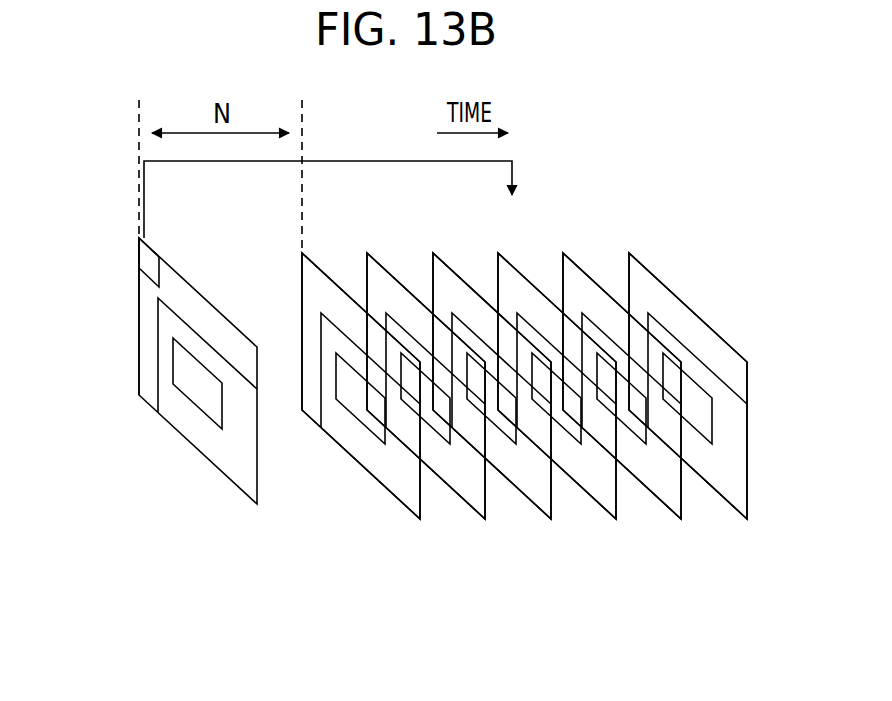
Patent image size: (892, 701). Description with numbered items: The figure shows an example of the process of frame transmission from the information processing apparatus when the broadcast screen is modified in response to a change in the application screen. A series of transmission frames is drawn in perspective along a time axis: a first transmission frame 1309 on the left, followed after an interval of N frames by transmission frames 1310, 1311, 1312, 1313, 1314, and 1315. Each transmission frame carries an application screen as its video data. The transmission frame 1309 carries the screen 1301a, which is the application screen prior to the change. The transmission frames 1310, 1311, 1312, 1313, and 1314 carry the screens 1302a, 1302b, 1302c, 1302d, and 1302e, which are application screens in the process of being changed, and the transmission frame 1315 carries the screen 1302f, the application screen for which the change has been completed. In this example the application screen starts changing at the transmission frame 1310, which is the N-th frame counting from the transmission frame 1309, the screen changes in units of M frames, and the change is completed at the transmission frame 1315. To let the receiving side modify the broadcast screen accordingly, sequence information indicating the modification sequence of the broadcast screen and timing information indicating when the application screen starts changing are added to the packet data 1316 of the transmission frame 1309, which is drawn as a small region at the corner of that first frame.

The screen 1301a is at (227, 471).
The screen 1302a is at (372, 475).
The screen 1302b is at (472, 505).
The screen 1302c is at (533, 504).
The screen 1302d is at (603, 505).
The screen 1302e is at (672, 508).
The screen 1302f is at (733, 506).
The transmission frame 1309 is at (139, 300).
The transmission frame 1310 is at (302, 253).
The transmission frame 1311 is at (367, 253).
The transmission frame 1312 is at (433, 253).
The transmission frame 1313 is at (498, 253).
The transmission frame 1314 is at (563, 253).
The transmission frame 1315 is at (629, 253).
The packet data 1316 is at (178, 243).